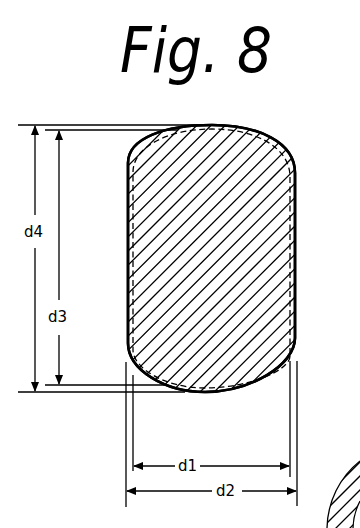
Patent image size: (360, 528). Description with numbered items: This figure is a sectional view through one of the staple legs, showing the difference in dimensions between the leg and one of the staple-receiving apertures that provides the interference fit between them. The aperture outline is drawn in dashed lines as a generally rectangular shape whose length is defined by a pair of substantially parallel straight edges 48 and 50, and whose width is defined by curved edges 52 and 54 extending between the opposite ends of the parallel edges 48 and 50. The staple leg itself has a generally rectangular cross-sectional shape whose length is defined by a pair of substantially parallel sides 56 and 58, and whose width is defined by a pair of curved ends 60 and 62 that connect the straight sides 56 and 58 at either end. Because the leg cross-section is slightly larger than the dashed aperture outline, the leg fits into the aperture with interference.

The straight edge 48 is at (128, 227).
The straight edge 50 is at (296, 195).
The curved edge 52 is at (290, 156).
The curved edge 54 is at (284, 370).
The side 56 is at (128, 283).
The side 58 is at (295, 268).
The curved end 60 is at (256, 128).
The curved end 62 is at (201, 392).